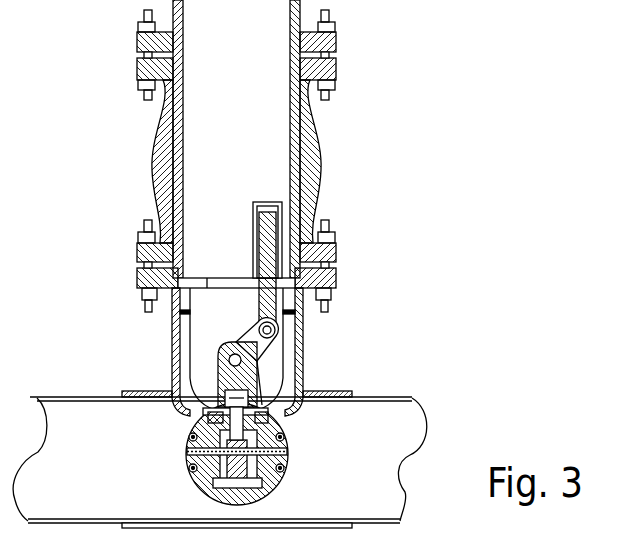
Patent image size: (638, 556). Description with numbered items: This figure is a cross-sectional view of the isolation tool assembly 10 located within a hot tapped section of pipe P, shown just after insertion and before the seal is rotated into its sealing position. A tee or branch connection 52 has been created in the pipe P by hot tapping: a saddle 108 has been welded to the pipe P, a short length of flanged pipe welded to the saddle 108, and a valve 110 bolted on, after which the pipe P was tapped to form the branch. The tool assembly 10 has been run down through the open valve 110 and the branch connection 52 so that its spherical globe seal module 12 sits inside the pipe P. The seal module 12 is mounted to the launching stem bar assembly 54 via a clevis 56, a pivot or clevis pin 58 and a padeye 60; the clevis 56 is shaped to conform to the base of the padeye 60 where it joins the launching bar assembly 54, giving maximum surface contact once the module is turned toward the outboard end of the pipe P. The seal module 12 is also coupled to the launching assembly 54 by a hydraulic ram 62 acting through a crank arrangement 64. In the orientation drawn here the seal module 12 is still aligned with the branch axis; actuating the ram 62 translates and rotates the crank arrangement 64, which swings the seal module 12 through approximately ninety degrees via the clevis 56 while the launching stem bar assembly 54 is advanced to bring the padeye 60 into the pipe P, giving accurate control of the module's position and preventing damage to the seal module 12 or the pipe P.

The isolation tool assembly 10 is at (320, 492).
The spherical globe seal module 12 is at (158, 495).
The branch connection 52 is at (340, 364).
The launching stem bar assembly 54 is at (305, 132).
The clevis 56 is at (219, 374).
The clevis pin 58 is at (219, 356).
The padeye 60 is at (303, 362).
The hydraulic ram 62 is at (263, 236).
The crank arrangement 64 is at (248, 337).
The saddle 108 is at (137, 391).
The valve 110 is at (225, 282).
The pipe P is at (412, 397).